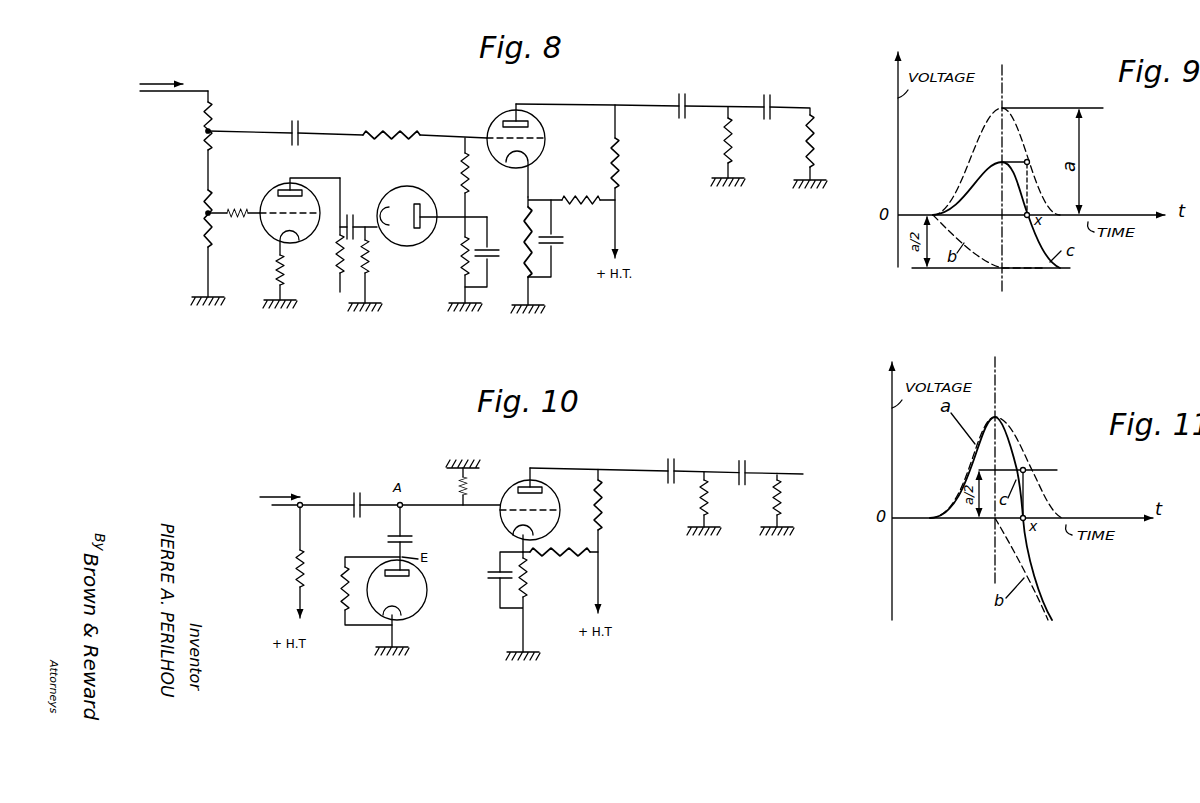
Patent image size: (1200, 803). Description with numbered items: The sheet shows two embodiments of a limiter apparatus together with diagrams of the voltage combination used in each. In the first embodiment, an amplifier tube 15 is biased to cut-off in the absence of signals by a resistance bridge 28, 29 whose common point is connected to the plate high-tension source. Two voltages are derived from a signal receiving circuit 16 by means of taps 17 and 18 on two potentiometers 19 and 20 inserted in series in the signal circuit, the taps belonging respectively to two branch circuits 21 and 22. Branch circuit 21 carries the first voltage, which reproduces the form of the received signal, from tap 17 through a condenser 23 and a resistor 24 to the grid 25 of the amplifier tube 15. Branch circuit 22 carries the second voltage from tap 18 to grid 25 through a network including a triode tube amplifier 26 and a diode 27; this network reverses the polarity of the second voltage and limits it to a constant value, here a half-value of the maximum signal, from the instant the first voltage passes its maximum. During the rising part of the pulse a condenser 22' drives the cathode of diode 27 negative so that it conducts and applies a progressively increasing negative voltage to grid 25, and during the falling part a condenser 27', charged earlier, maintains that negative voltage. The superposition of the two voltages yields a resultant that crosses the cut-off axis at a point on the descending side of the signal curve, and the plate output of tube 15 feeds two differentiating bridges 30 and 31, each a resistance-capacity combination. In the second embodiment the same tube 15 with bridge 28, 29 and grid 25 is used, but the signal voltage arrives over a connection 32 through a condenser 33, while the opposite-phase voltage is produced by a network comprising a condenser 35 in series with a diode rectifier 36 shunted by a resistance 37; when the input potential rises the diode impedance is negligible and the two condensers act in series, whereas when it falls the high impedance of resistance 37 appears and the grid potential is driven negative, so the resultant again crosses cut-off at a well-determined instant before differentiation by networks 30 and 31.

In FIG. 8, the amplifier tube 15 is at (537, 130).
In FIG. 10, the amplifier tube 15 is at (548, 490).
In FIG. 8, the signal receiving circuit 16 is at (182, 96).
In FIG. 8, the tap 17 is at (211, 129).
In FIG. 8, the tap 18 is at (212, 211).
In FIG. 8, the potentiometer 19 is at (205, 142).
In FIG. 8, the potentiometer 20 is at (205, 225).
In FIG. 8, the branch circuit 21 is at (330, 133).
In FIG. 8, the branch circuit 22 is at (354, 227).
In FIG. 8, the condenser 22' is at (366, 209).
In FIG. 8, the condenser 23 is at (296, 120).
In FIG. 8, the resistor 24 is at (392, 133).
In FIG. 8, the grid 25 is at (531, 147).
In FIG. 10, the grid 25 is at (542, 515).
In FIG. 8, the triode tube amplifier 26 is at (277, 230).
In FIG. 8, the diode 27 is at (432, 232).
In FIG. 8, the condenser 27' is at (492, 250).
In FIG. 8, the resistance bridge element 28 is at (557, 238).
In FIG. 10, the resistance bridge element 28 is at (550, 560).
In FIG. 8, the resistance bridge element 29 is at (614, 173).
In FIG. 10, the resistance bridge element 29 is at (602, 526).
In FIG. 8, the differentiating bridge 30 is at (726, 124).
In FIG. 10, the differentiating bridge 30 is at (702, 482).
In FIG. 8, the differentiating bridge 31 is at (806, 128).
In FIG. 10, the differentiating bridge 31 is at (776, 486).
In FIG. 10, the connection 32 is at (326, 503).
In FIG. 10, the condenser 33 is at (361, 497).
In FIG. 10, the condenser 35 is at (411, 545).
In FIG. 10, the diode rectifier 36 is at (414, 583).
In FIG. 10, the resistance 37 is at (345, 561).